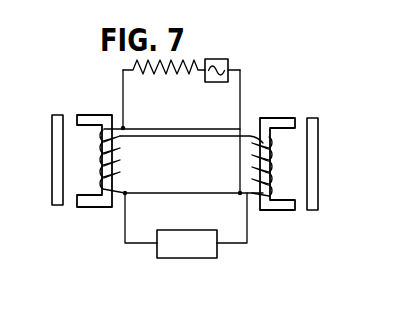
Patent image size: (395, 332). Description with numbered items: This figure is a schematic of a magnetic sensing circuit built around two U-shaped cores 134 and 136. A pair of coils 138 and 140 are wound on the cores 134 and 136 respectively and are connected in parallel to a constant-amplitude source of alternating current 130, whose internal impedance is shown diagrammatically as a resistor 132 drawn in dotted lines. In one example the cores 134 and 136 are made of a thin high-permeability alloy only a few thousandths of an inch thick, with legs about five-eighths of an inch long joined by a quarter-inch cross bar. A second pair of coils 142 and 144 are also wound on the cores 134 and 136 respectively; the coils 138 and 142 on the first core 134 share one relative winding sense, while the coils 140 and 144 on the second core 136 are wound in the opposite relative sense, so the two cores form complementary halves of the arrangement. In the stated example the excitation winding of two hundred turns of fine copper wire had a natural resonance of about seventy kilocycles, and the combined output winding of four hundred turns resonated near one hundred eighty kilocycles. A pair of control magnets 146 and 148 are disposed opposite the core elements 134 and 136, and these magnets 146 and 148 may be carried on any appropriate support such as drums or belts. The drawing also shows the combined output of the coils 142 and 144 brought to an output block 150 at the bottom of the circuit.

The constant-amplitude source of alternating current 130 is at (220, 60).
The resistor 132 is at (160, 70).
The U-shaped core 134 is at (91, 115).
The U-shaped core 136 is at (285, 118).
The coil 138 is at (115, 144).
The coil 140 is at (249, 147).
The coil 142 is at (105, 178).
The coil 144 is at (268, 177).
The control magnet 146 is at (52, 162).
The control magnet 148 is at (318, 152).
The output 150 is at (183, 259).